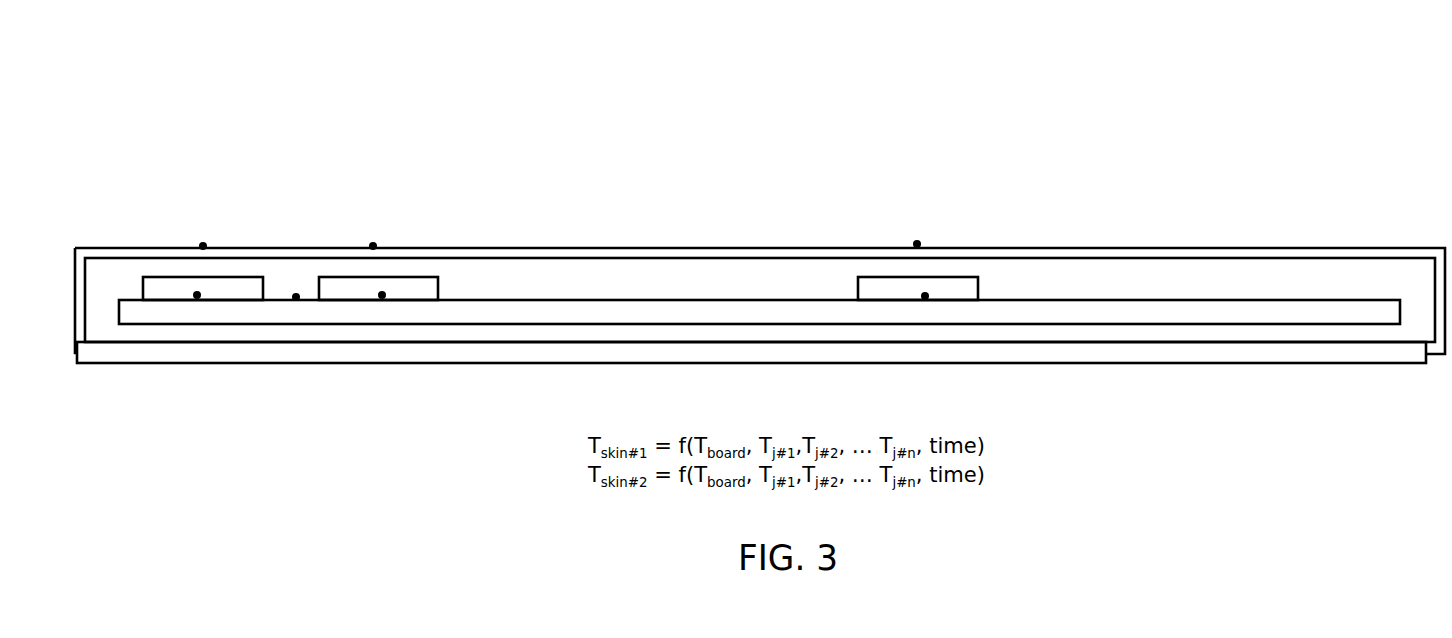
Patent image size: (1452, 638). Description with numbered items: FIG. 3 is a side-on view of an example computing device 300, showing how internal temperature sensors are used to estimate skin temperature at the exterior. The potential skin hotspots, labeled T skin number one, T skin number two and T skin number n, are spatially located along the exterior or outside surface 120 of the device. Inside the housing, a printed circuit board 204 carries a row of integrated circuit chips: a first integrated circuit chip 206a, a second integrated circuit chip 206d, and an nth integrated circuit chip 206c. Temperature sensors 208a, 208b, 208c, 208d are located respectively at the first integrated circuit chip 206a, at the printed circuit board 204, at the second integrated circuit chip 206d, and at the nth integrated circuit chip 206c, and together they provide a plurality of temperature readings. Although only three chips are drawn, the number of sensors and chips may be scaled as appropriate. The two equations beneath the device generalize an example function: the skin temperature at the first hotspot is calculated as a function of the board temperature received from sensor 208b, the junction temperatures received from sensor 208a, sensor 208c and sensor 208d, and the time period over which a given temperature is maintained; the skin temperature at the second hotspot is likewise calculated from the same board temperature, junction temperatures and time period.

The computing device 300 is at (232, 79).
The exterior or outside surface 120 is at (519, 248).
The printed circuit board 204 is at (613, 300).
The integrated circuit chip 206a is at (251, 276).
The chip #2 206d is at (419, 276).
The integrated circuit chip 206c is at (964, 276).
The temperature sensor 208a is at (197, 296).
The temperature sensor 208b is at (296, 298).
The temperature sensor 208c is at (382, 296).
The temperature sensor 208d is at (925, 297).